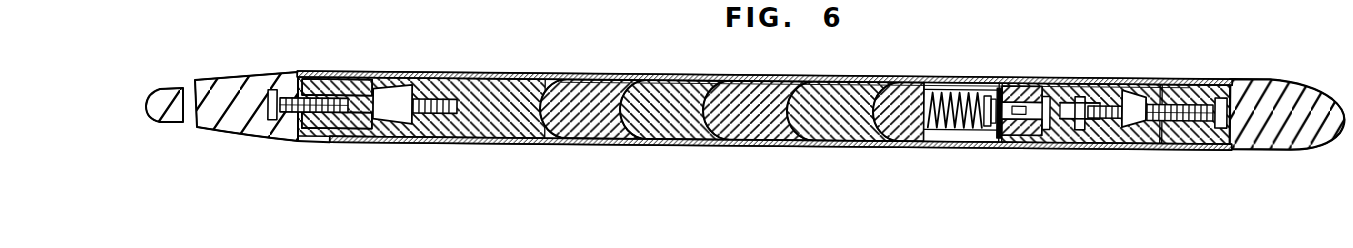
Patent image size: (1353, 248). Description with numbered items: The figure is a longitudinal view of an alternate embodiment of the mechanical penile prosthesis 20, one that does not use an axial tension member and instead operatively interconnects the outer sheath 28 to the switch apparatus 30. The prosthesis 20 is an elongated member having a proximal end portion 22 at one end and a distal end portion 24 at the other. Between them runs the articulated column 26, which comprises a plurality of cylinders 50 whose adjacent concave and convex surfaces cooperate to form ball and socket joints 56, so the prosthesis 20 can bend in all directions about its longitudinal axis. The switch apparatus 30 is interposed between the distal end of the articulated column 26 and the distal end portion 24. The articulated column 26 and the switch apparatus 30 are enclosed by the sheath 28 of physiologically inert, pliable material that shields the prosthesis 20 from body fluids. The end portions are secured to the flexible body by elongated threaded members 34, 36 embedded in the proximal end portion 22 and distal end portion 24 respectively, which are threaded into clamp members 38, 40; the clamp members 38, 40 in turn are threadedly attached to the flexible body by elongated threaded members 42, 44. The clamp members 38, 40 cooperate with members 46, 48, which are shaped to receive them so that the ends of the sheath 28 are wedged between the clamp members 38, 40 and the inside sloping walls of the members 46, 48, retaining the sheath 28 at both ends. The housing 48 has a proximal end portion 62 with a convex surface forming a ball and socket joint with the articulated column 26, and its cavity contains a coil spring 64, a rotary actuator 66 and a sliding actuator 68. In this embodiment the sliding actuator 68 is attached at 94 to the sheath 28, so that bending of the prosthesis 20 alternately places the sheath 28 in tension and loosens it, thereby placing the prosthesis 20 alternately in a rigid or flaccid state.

The penile prosthesis 20 is at (689, 150).
The proximal end portion 22 is at (215, 90).
The distal end portion 24 is at (1294, 97).
The articulated column 26 is at (667, 81).
The sheath 28 is at (490, 73).
The switch apparatus 30 is at (960, 148).
The elongated threaded member 34 is at (288, 100).
The elongated threaded member 36 is at (1208, 97).
The clamp member 38 is at (340, 92).
The clamp member 40 is at (1163, 92).
The elongated threaded member 42 is at (430, 100).
The elongated threaded member 44 is at (1107, 110).
The member 46 is at (522, 85).
The housing 48 is at (1083, 92).
The cylinders 50 is at (602, 126).
The ball and socket joints 56 is at (787, 88).
The proximal end portion of the cylindrical member 62 is at (898, 86).
The coil spring 64 is at (927, 131).
The rotary actuator 66 is at (998, 140).
The sliding actuator 68 is at (1063, 140).
The attachment location 94 is at (1017, 140).